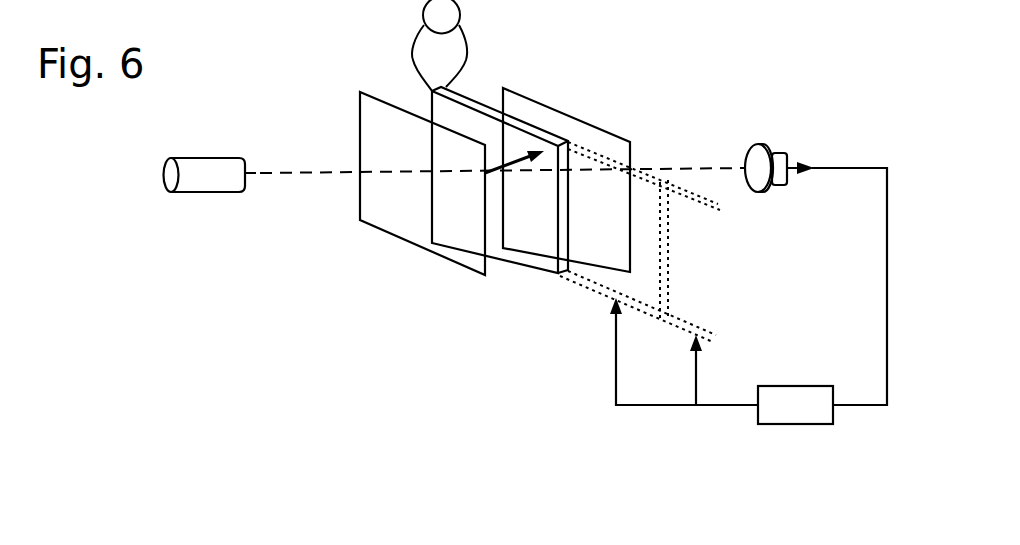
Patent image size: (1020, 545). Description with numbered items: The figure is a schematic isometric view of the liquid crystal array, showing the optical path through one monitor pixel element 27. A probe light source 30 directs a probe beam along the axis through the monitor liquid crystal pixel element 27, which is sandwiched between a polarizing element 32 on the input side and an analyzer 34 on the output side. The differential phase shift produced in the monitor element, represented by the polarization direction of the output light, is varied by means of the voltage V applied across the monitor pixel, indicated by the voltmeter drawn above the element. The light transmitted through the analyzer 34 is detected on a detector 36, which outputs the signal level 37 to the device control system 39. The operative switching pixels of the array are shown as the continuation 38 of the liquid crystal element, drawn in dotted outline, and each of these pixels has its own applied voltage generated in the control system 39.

The monitor pixel element 27 is at (466, 105).
The probe light source 30 is at (204, 192).
The polarizing element 32 is at (360, 92).
The analyzer 34 is at (521, 95).
The detector 36 is at (762, 146).
The signal level 37 is at (828, 168).
The continuation of the liquid crystal element 38 is at (710, 287).
The device control system 39 is at (797, 424).